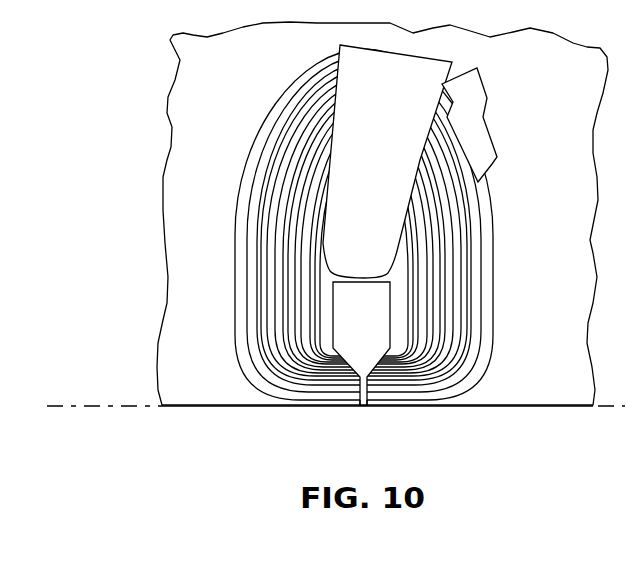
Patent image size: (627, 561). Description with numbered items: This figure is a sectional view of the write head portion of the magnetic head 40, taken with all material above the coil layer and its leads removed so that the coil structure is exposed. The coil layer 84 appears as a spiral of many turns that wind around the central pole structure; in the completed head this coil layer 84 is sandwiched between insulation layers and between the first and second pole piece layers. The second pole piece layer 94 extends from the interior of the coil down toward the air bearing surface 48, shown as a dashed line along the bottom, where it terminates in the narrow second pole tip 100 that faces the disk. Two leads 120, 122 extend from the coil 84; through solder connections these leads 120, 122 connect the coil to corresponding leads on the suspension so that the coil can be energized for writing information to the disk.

The magnetic head 40 is at (513, 211).
The air bearing surface (ABS) 48 is at (101, 405).
The coil layer 84 is at (467, 303).
The second pole piece layer 94 is at (375, 333).
The second pole tip 100 is at (362, 408).
The lead 120 is at (392, 158).
The lead 122 is at (483, 117).